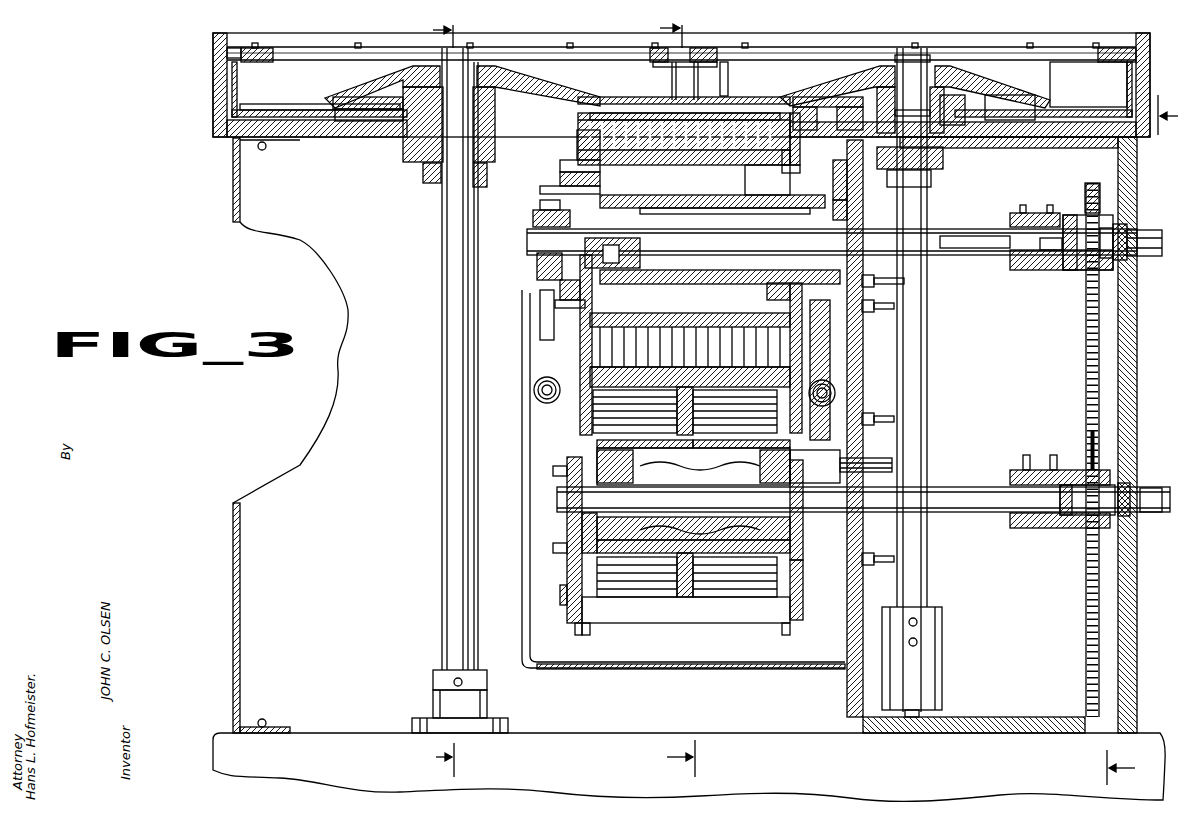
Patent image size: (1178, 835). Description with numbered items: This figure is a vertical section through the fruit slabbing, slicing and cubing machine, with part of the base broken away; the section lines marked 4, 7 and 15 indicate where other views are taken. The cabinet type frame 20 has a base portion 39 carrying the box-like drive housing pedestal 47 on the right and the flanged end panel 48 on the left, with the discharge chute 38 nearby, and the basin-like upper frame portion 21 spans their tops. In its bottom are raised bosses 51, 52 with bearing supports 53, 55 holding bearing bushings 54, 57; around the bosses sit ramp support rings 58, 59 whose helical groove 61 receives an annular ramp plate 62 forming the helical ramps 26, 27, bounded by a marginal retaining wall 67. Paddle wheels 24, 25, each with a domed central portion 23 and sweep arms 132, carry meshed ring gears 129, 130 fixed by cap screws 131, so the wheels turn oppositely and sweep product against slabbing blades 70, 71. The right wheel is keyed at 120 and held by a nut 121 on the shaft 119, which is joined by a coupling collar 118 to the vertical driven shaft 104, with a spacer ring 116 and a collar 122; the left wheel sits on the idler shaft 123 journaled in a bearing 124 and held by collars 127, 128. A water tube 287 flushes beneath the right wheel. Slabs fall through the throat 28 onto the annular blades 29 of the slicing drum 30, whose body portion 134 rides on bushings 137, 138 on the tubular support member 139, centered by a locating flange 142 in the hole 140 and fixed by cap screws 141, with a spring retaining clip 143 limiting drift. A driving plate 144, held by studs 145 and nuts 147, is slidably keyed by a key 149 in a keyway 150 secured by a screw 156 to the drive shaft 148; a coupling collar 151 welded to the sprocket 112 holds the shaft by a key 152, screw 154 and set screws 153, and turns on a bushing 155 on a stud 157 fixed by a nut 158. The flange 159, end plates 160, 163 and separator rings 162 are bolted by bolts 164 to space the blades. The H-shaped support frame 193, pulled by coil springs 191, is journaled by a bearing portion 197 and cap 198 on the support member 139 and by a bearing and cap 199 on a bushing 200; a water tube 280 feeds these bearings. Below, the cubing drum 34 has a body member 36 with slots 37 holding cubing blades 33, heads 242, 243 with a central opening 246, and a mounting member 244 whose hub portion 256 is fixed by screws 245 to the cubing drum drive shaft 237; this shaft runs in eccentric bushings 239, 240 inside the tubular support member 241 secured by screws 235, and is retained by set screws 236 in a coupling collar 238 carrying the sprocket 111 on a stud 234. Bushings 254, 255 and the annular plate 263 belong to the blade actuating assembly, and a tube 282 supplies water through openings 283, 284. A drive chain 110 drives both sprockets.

The cabinet type frame 20 is at (265, 482).
The basin-like upper frame portion 21 is at (213, 62).
The domed central portion 23 is at (505, 65).
The product advancing rotor or paddle wheel 24 is at (372, 78).
The product advancing rotor or paddle wheel 25 is at (1010, 78).
The helical ramp 26 is at (250, 106).
The helical ramp 27 is at (1098, 100).
The throat 28 is at (640, 98).
The annular slicing blade 29 is at (680, 153).
The slicing drum 30 is at (570, 178).
The cubing blade 33 is at (663, 617).
The cubing drum 34 is at (560, 460).
The cubing drum body member 36 is at (556, 437).
The blade receiving slot 37 is at (580, 632).
The discharge chute 38 is at (800, 668).
The base portion 39 is at (916, 770).
The drive housing pedestal 47 is at (1120, 668).
The end panel 48 is at (236, 582).
The raised boss 51 is at (370, 112).
The raised boss 52 is at (1010, 140).
The bearing support 53 is at (420, 156).
The shaft bearing bushing 54 is at (412, 130).
The bearing support 55 is at (885, 120).
The shaft bearing bushing 57 is at (940, 150).
The slabbing ramp support ring 58 is at (345, 100).
The slabbing ramp support ring 59 is at (1020, 90).
The helical ramp receiving groove 61 is at (395, 125).
The annular ramp plate 62 is at (278, 108).
The marginal retaining wall 67 is at (232, 95).
The slabbing blade 70 is at (676, 72).
The slabbing blade 71 is at (775, 85).
The vertical driven shaft 104 is at (920, 712).
The drive chain 110 is at (1100, 390).
The driven sprocket 111 is at (1100, 447).
The driven sprocket 112 is at (1100, 196).
The spacer ring 116 is at (853, 130).
The coupling collar 118 is at (940, 650).
The shaft 119 is at (905, 385).
The keyed taper 120 is at (924, 62).
The nut 121 is at (888, 62).
The collar 122 is at (925, 185).
The idler shaft 123 is at (448, 622).
The bearing 124 is at (450, 700).
The collar 127 is at (425, 172).
The collar 128 is at (435, 678).
The ring gear 129 is at (262, 58).
The ring gear 130 is at (715, 56).
The cap screw 131 is at (240, 50).
The sweep arm 132 is at (300, 65).
The slicing drum body portion 134 is at (768, 173).
The bearing bushing 137 is at (620, 190).
The bearing bushing 138 is at (770, 198).
The tubular support member 139 is at (740, 206).
The hole 140 is at (850, 300).
The cap screw 141 is at (832, 318).
The locating flange 142 is at (853, 193).
The spring retaining clip 143 is at (560, 210).
The driving plate 144 is at (560, 287).
The stud 145 is at (640, 304).
The nut 147 is at (580, 330).
The slicing drum drive shaft 148 is at (972, 248).
The key 149 is at (630, 258).
The keyway 150 is at (620, 238).
The coupling collar 151 is at (1035, 268).
The key 152 is at (1030, 270).
The set screw 153 is at (1048, 212).
The screw 154 is at (1020, 280).
The bearing bushing 155 is at (1110, 280).
The screw 156 is at (605, 240).
The stud 157 is at (1120, 262).
The nut 158 is at (1135, 256).
The radially extending flange 159 is at (773, 152).
The annular end plate 160 is at (790, 168).
The blade separator ring 162 is at (575, 140).
The annular end plate 163 is at (580, 162).
The bolt 164 is at (555, 338).
The coil spring 191 is at (535, 390).
The H-shaped support frame 193 is at (550, 345).
The bearing portion 197 is at (845, 318).
The bearing cap 198 is at (838, 210).
The bearing portion and cap 199 is at (545, 275).
The bearing bushing 200 is at (535, 218).
The stud 234 is at (1111, 499).
The screw 235 is at (878, 418).
The set screw 236 is at (1062, 443).
The cubing drum drive shaft 237 is at (975, 512).
The coupling collar 238 is at (1015, 528).
The bearing bushing 239 is at (635, 476).
The bearing bushing 240 is at (815, 470).
The tubular support member 241 is at (735, 530).
The head 242 is at (592, 630).
The head 243 is at (786, 632).
The cubing drum mounting member 244 is at (582, 530).
The screw 245 is at (553, 470).
The central opening 246 is at (776, 590).
The bearing bushing 254 is at (630, 444).
The bearing bushing 255 is at (766, 444).
The hub portion 256 is at (567, 517).
The blade actuating annular plate 263 is at (568, 590).
The water tube 280 is at (905, 281).
The tube 282 is at (895, 466).
The opening 283 is at (700, 463).
The opening 284 is at (693, 542).
The tube 287 is at (960, 120).
The section line 4 is at (454, 401).
The section line 7 is at (688, 400).
The section line 15 is at (1121, 440).